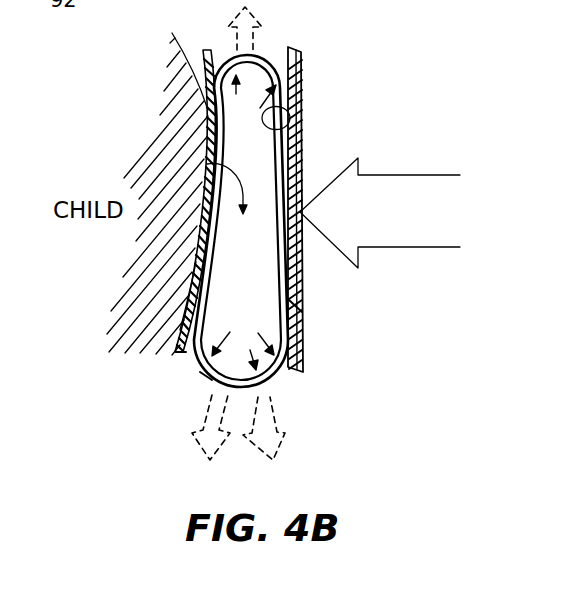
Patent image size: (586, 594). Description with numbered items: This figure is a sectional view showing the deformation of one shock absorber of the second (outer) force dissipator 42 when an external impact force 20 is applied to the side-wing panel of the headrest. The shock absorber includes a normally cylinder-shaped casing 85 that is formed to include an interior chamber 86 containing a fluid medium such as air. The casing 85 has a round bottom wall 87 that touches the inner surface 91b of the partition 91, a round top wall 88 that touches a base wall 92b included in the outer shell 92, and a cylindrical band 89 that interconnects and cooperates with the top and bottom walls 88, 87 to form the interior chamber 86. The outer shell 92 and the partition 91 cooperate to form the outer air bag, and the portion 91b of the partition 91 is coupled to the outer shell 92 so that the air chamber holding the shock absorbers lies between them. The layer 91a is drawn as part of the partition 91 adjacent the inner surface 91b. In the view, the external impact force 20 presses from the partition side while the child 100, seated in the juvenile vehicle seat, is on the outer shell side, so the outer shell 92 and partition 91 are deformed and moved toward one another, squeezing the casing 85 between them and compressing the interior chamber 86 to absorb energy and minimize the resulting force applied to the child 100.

The external impact force 20 is at (404, 173).
The second (outer) force dissipator 42 is at (166, 370).
The casing 85 is at (265, 49).
The interior chamber 86 is at (207, 164).
The round bottom wall 87 is at (295, 311).
The round top wall 88 is at (200, 278).
The cylindrical band 89 is at (204, 371).
The partition 91 is at (298, 46).
The first layer of strip 91a is at (298, 73).
The inner surface of partition 91b is at (298, 98).
The outer shell 92 is at (196, 42).
The base wall 92b is at (187, 308).
The child 100 is at (173, 135).